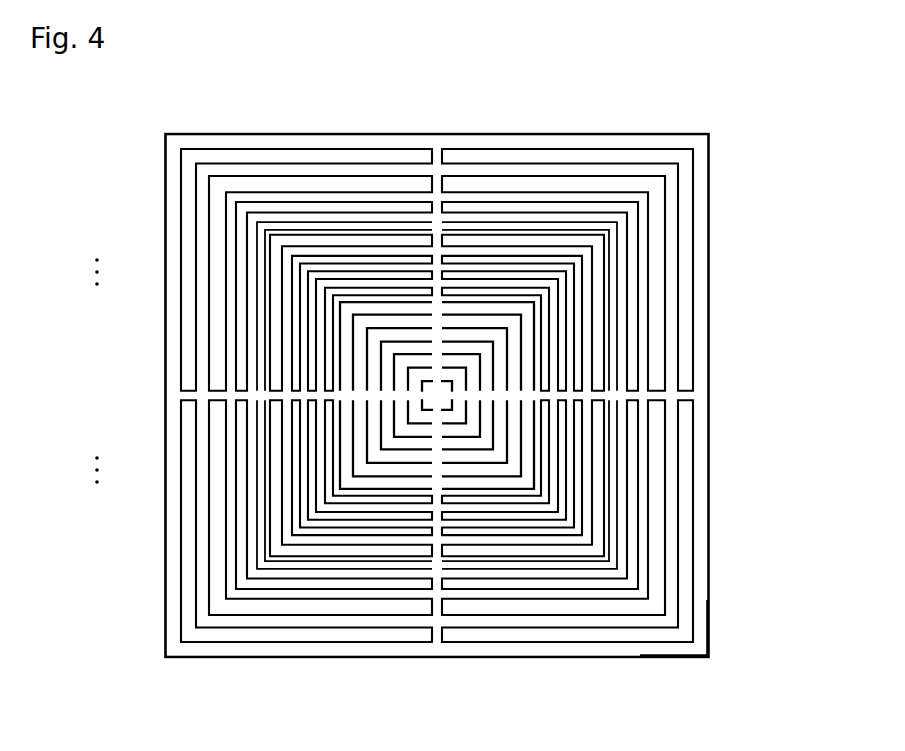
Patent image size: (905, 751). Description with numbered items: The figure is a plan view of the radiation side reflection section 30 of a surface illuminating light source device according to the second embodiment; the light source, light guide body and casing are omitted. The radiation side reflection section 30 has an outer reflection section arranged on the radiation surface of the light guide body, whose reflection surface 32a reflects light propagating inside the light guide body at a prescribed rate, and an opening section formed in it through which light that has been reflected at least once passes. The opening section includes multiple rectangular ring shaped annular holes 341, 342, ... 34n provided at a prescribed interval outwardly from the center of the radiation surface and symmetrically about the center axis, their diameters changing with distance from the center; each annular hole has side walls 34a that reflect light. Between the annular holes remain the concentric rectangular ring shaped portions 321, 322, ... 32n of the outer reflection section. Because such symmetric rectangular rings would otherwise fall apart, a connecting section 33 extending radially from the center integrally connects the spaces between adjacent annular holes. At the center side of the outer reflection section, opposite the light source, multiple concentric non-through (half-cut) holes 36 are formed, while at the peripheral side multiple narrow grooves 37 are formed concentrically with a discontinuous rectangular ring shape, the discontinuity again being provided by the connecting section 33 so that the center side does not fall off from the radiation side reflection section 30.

The radiation side reflection section 30 is at (74, 208).
The n-th rectangular ring shaped portion of the outer reflection section 32n is at (173, 262).
The second rectangular ring shaped portion of the outer reflection section 322 is at (330, 330).
The first rectangular ring shaped portion of the outer reflection section 321 is at (345, 371).
The connecting section 33 is at (343, 225).
The n-th annular hole 34n is at (188, 440).
The second annular hole 342 is at (310, 448).
The first annular hole 341 is at (327, 493).
The side wall of annular hole 34a is at (654, 243).
The non-through hole 36 is at (445, 403).
The narrow groove 37 is at (492, 460).
The reflection surface 32a is at (668, 656).